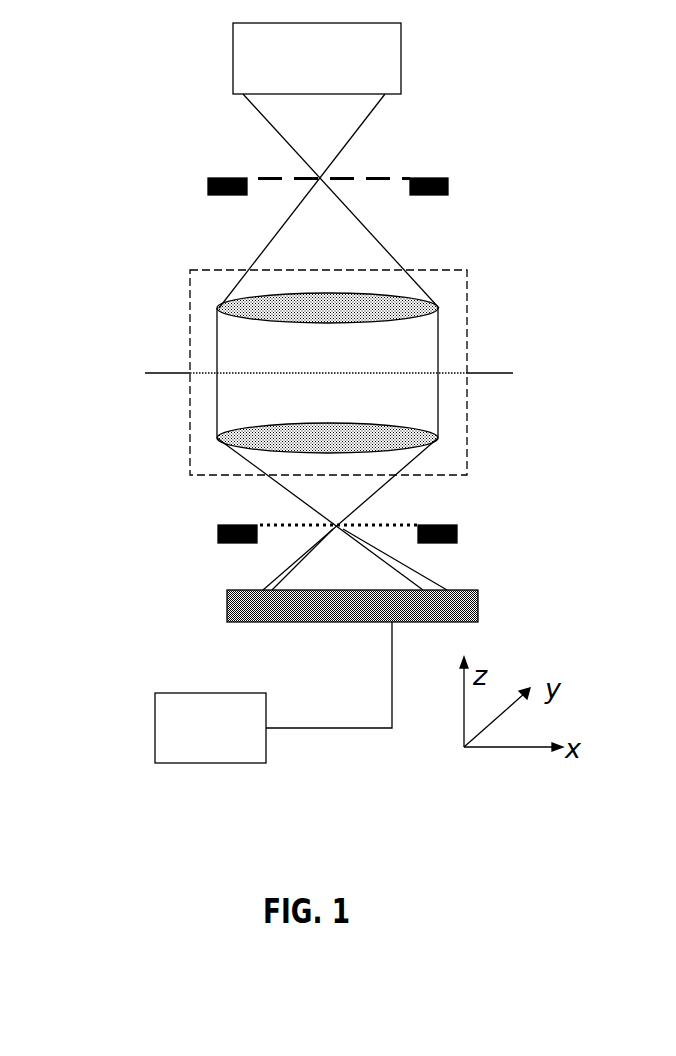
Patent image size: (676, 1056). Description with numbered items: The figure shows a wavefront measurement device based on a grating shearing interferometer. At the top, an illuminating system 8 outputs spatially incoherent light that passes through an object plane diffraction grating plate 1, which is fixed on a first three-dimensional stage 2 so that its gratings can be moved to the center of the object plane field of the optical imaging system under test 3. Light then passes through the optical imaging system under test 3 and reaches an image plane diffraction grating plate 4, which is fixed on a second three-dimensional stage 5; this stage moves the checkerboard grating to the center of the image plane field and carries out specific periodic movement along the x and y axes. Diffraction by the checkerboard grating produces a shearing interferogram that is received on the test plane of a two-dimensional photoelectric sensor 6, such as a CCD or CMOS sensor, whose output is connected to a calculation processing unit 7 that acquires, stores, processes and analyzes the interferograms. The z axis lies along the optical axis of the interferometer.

The illuminating system 8 is at (233, 52).
The object plane diffraction grating plate 1 is at (222, 138).
The first three-dimensional stage 2 is at (241, 167).
The optical imaging system under test 3 is at (251, 363).
The image plane diffraction grating plate 4 is at (226, 504).
The second three-dimensional stage 5 is at (246, 556).
The two-dimensional photoelectric sensor 6 is at (256, 630).
The calculation processing unit 7 is at (213, 708).